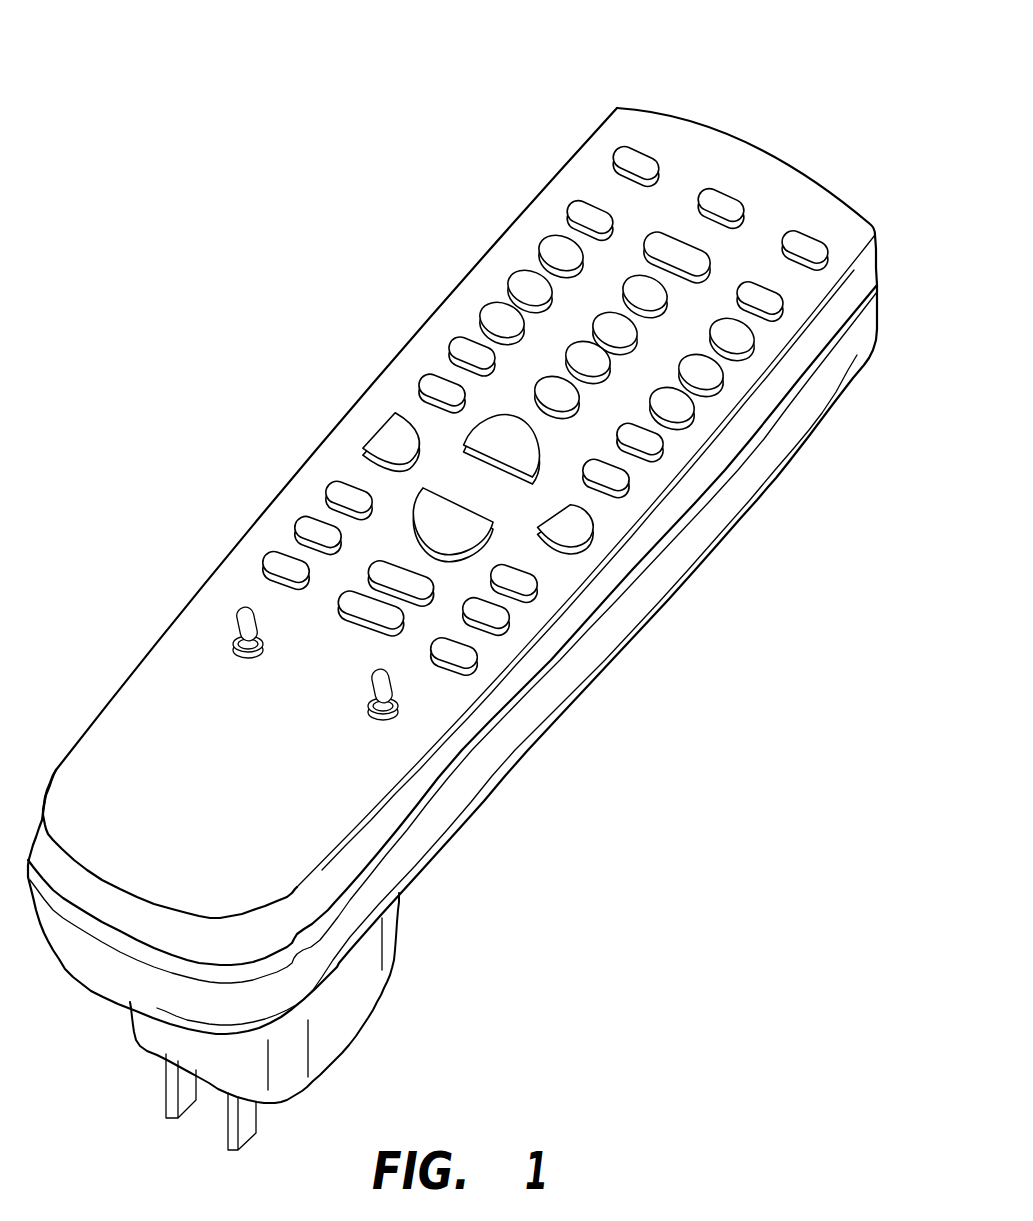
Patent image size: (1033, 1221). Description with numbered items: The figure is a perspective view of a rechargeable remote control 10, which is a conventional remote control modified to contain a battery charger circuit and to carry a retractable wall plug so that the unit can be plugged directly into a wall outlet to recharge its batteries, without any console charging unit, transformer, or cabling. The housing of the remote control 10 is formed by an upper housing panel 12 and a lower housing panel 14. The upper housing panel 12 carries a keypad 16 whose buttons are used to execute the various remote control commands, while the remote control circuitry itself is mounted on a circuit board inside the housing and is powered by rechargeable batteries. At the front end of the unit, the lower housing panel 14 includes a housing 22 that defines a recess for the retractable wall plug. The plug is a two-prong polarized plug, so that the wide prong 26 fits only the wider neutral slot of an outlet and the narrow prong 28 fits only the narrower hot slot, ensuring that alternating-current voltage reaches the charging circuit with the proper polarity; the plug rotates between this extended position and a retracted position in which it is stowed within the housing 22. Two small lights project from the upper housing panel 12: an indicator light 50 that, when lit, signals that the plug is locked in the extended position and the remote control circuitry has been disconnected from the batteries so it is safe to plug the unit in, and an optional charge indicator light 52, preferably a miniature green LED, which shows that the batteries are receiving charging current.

The rechargeable remote control 10 is at (500, 114).
The upper housing panel 12 is at (747, 372).
The lower housing panel 14 is at (719, 513).
The keypad 16 is at (478, 260).
The housing 22 is at (150, 1023).
The wide prong 26 is at (170, 1087).
The narrow prong 28 is at (228, 1123).
The indicator light 50 is at (243, 623).
The charge indicator light 52 is at (390, 693).